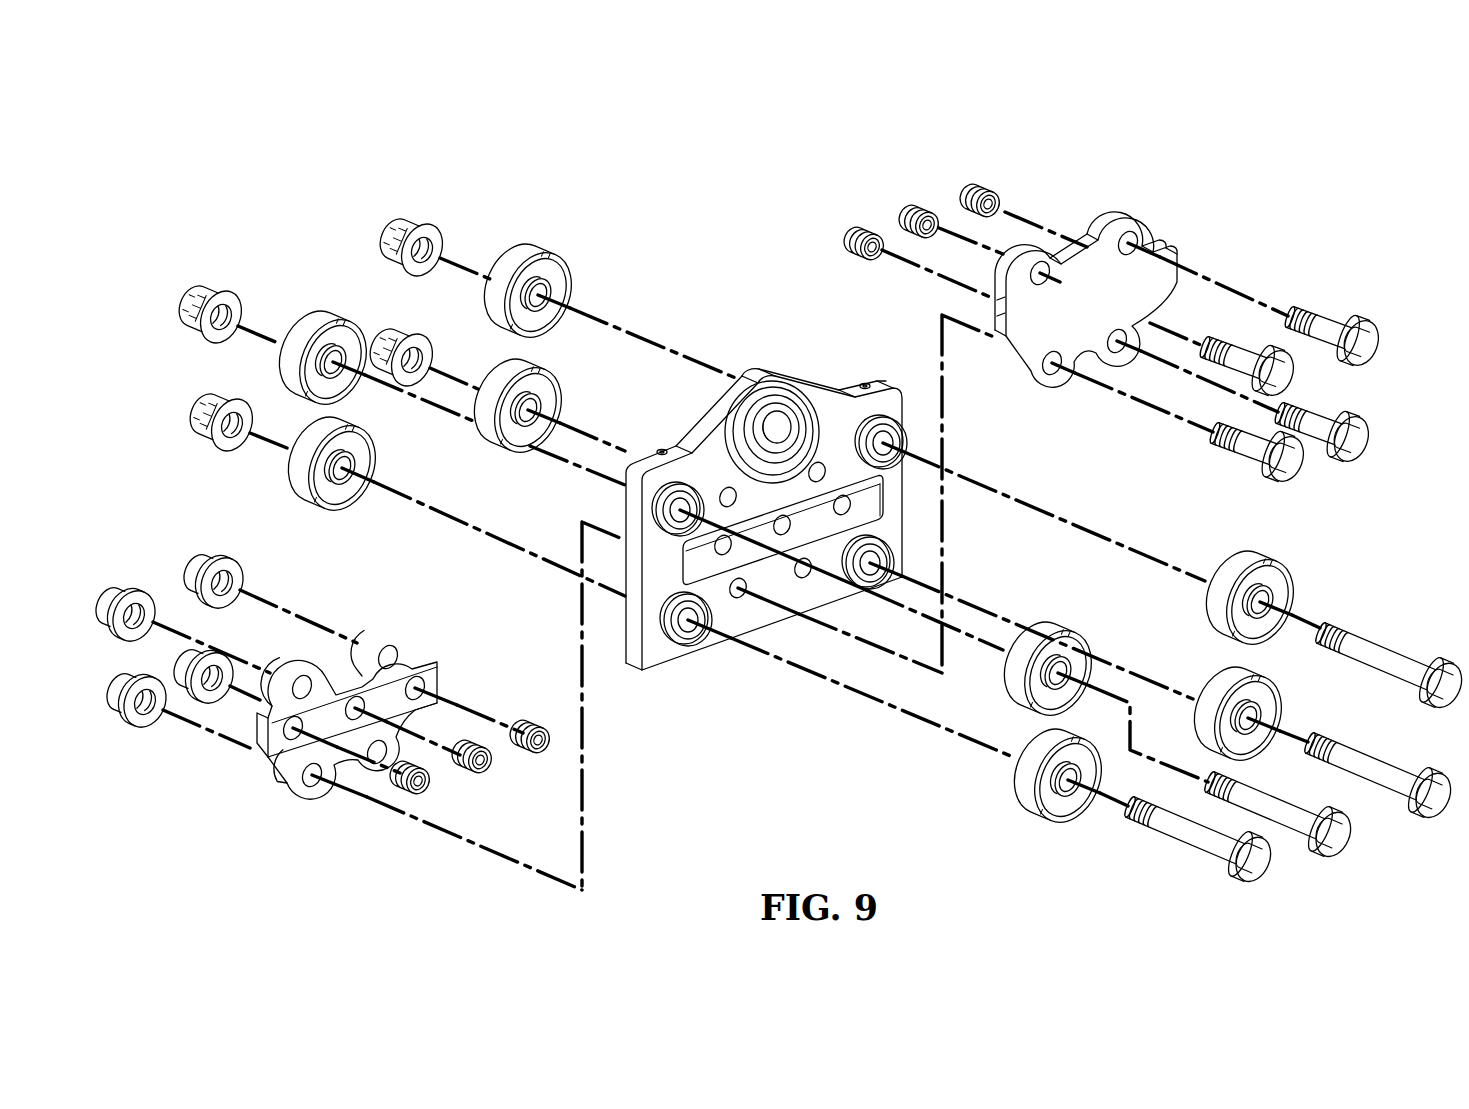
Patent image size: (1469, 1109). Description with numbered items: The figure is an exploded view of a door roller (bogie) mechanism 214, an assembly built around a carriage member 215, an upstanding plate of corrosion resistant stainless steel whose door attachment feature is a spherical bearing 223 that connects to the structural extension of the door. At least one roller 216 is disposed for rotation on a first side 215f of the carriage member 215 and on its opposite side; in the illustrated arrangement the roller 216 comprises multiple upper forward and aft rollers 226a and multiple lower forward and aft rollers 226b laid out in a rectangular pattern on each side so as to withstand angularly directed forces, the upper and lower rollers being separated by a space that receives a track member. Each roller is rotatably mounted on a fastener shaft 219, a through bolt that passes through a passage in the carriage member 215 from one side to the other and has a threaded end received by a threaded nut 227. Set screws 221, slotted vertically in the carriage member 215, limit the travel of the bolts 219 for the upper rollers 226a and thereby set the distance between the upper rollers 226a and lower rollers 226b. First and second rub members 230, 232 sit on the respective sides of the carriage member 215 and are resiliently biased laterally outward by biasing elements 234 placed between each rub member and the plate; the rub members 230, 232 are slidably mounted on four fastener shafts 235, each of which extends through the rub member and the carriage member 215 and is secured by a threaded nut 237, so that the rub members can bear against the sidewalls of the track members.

The door roller mechanism 214 is at (672, 154).
The carriage member 215 is at (760, 369).
The first side of the carriage member 215f is at (890, 390).
The roller 216 is at (1214, 552).
The fastener shaft 219 is at (1395, 645).
The set screw 221 is at (866, 383).
The spherical bearing 223 is at (782, 415).
The upper forward and aft rollers 226a is at (517, 238).
The lower forward and aft rollers 226b is at (288, 480).
The threaded nut 227 is at (400, 238).
The first rub member 230 is at (1124, 216).
The second rub member 232 is at (308, 800).
The biasing element 234 is at (986, 190).
The fastener shaft 235 is at (1328, 313).
The threaded nut 237 is at (192, 575).